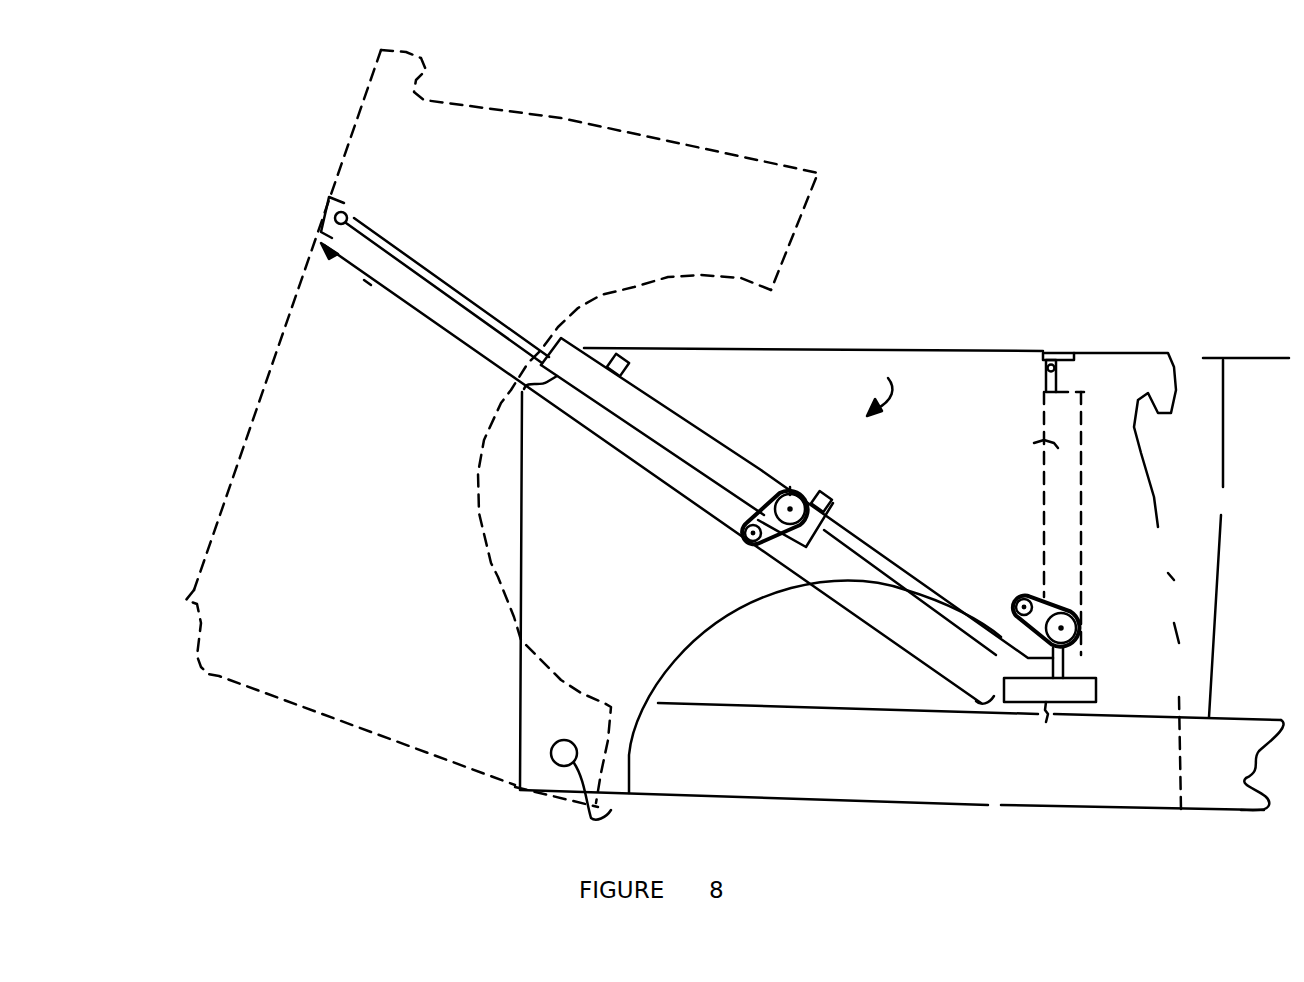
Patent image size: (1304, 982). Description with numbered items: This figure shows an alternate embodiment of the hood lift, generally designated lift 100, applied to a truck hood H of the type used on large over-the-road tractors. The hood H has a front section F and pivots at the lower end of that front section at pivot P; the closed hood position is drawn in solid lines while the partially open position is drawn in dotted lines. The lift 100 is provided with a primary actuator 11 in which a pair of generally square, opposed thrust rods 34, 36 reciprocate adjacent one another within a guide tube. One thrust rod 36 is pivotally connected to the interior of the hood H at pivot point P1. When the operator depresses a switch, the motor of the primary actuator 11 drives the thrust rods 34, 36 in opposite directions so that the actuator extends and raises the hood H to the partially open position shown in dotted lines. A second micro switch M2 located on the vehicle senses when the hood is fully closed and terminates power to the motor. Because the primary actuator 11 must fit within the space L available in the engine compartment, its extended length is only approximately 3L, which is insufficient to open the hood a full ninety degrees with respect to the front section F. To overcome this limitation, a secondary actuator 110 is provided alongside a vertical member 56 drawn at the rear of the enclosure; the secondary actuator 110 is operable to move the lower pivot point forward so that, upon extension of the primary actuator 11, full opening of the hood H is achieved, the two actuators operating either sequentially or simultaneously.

The hood H is at (297, 277).
The front section F is at (797, 778).
The pivot P is at (589, 782).
The pivot point P1 is at (338, 213).
The thrust rod 34 is at (900, 571).
The thrust rod 36 is at (447, 287).
The primary actuator 11 is at (682, 427).
The second micro switch M2 is at (623, 352).
The vertical rail 56 is at (1053, 385).
The secondary actuator 110 is at (1050, 712).
The lift 100 is at (880, 388).
The space L is at (1246, 537).
The extended length 3L is at (618, 467).